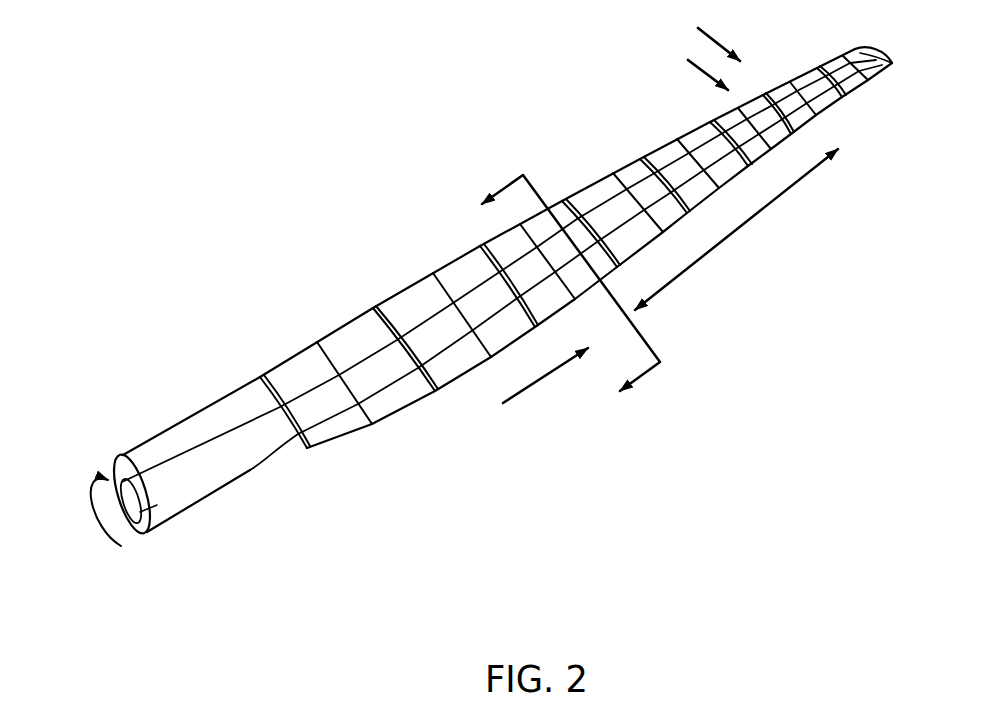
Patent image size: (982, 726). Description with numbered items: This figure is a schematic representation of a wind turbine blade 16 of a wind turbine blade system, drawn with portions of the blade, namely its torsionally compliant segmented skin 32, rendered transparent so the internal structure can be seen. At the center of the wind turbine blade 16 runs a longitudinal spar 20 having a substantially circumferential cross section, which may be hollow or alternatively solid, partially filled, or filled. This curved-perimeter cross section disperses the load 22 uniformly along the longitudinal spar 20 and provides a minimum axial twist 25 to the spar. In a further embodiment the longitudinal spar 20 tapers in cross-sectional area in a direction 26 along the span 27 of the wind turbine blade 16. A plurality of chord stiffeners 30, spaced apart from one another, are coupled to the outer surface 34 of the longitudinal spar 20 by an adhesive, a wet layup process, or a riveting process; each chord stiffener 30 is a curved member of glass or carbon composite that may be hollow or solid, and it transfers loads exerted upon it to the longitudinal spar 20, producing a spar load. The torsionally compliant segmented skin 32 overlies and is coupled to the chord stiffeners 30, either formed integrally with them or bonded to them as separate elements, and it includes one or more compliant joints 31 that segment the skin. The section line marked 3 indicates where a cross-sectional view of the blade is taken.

The wind turbine blade 16 is at (246, 141).
The longitudinal spar 20 is at (202, 455).
The load 22 is at (690, 66).
The axial twist 25 is at (95, 494).
The direction 26 is at (548, 377).
The span 27 is at (725, 242).
The chord stiffener 30 is at (297, 408).
The compliant joint 31 is at (345, 358).
The torsionally compliant segmented skin 32 is at (402, 393).
The outer surface 34 is at (148, 534).
The section line 3- 3 is at (568, 289).